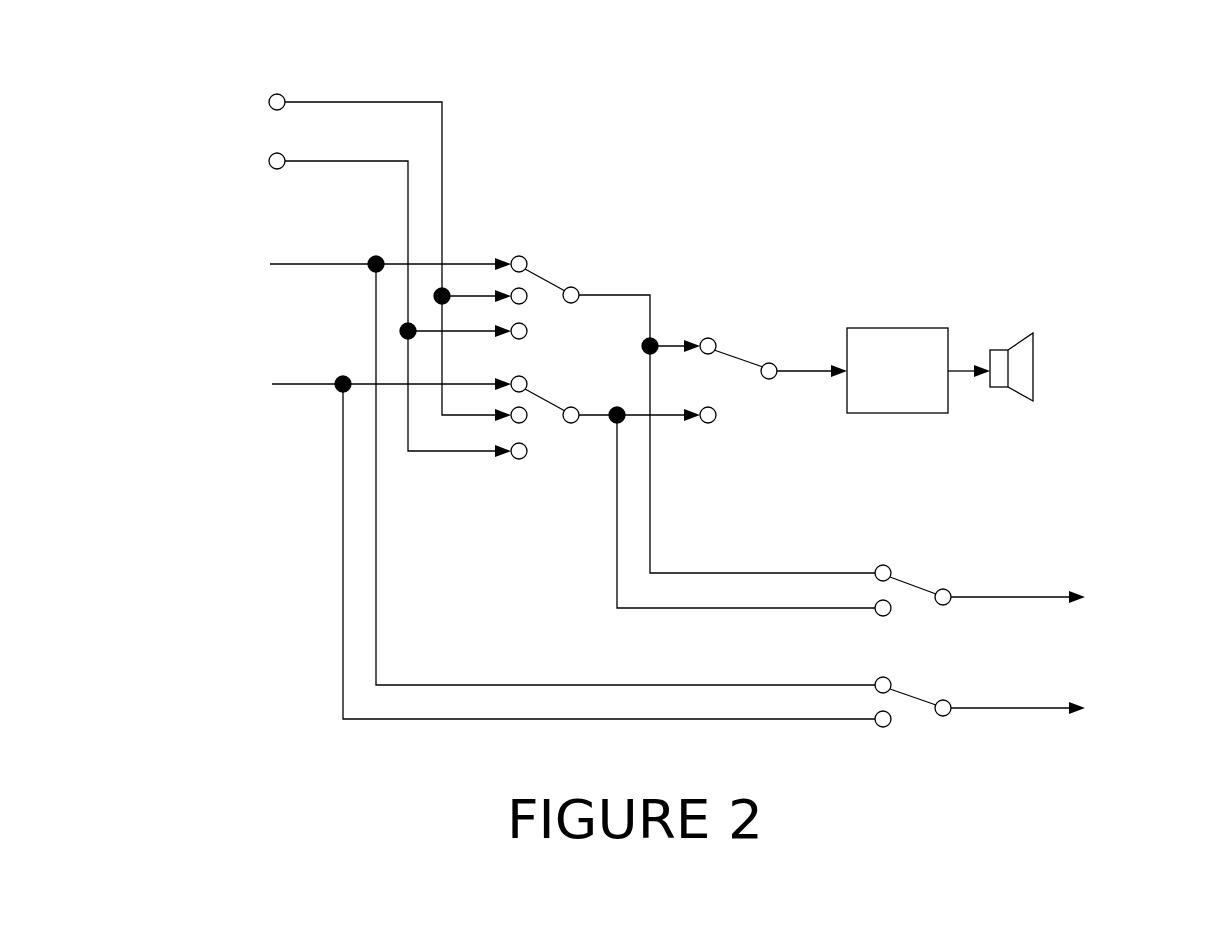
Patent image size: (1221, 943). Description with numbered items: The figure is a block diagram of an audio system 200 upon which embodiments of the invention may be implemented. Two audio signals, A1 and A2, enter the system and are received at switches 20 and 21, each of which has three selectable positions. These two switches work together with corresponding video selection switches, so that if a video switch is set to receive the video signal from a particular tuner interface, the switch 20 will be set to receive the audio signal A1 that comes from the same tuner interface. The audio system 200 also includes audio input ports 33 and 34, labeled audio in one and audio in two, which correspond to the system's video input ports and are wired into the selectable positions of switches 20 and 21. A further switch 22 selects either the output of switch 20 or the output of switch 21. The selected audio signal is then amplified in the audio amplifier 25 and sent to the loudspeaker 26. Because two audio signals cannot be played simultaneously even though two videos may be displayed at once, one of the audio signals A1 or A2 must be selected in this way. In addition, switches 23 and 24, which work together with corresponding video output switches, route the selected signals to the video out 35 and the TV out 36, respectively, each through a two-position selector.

The audio system 200 is at (62, 49).
The switch 20 is at (536, 274).
The switch 21 is at (536, 394).
The switch 22 is at (745, 359).
The switch 23 is at (915, 584).
The switch 24 is at (915, 696).
The audio amplifier 25 is at (855, 328).
The loudspeaker 26 is at (1035, 396).
The audio input port 33 is at (282, 96).
The audio input port 34 is at (282, 155).
The video out 35 is at (1192, 599).
The TV out 36 is at (1192, 711).